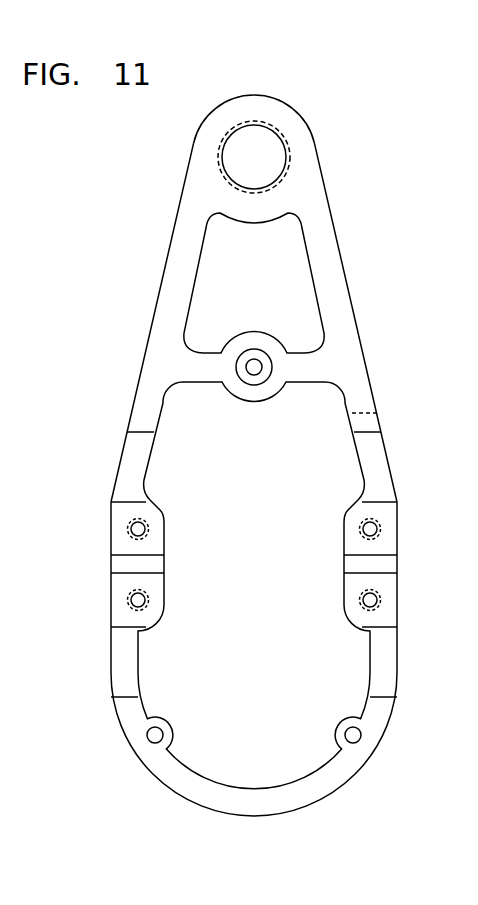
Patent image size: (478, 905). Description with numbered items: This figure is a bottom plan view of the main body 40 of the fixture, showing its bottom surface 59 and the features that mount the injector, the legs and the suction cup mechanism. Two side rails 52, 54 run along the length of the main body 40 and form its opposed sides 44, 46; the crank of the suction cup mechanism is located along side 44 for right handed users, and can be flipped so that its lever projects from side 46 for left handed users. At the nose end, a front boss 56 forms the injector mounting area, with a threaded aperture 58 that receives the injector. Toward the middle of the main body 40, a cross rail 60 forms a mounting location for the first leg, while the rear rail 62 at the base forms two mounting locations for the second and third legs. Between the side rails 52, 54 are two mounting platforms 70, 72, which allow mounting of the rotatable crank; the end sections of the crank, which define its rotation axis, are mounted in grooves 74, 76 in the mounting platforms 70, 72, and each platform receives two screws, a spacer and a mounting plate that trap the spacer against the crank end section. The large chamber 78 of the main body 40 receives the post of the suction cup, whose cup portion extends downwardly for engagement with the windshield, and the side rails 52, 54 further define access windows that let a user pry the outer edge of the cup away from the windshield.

The main body 40 is at (130, 263).
The side 44 is at (353, 302).
The side 46 is at (147, 343).
The side rail 52 is at (390, 458).
The side rail 54 is at (118, 470).
The front boss 56 is at (287, 102).
The threaded aperture 58 is at (293, 152).
The bottom surface 59 is at (273, 762).
The cross rail 60 is at (197, 348).
The rear rail 62 is at (174, 795).
The mounting platform 70 is at (347, 523).
The mounting platform 72 is at (163, 517).
The groove 74 is at (378, 555).
The groove 76 is at (130, 555).
The chamber 78 is at (278, 680).